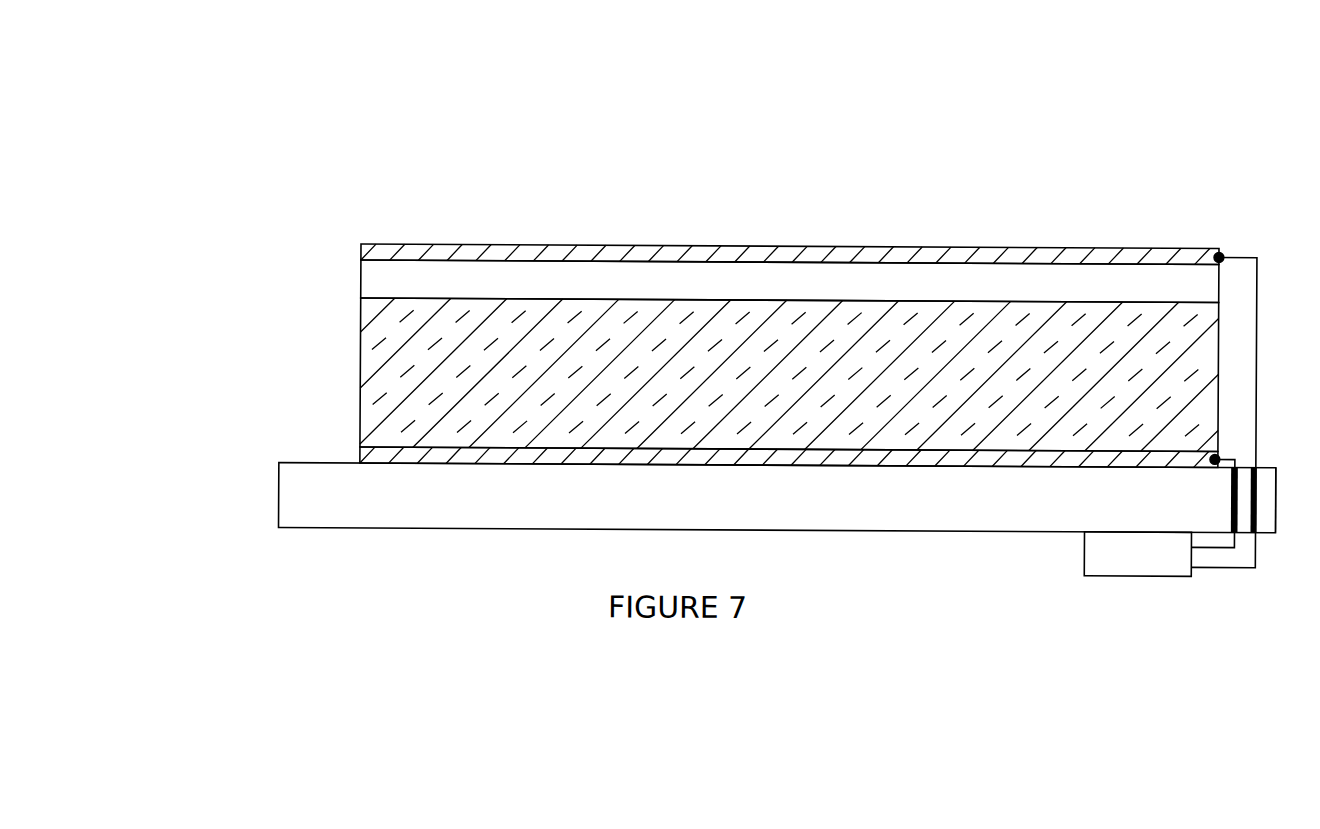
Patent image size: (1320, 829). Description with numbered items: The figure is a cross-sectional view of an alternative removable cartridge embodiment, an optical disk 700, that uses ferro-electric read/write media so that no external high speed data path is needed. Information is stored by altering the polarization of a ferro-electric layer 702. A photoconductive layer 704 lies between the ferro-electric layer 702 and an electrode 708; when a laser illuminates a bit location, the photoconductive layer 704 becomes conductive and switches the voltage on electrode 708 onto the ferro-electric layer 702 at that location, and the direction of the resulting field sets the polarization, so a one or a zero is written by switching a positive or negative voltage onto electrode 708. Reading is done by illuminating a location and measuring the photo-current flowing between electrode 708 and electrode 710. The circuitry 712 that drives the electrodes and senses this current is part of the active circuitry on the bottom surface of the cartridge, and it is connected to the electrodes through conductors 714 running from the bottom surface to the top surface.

The optical disk 700 is at (1147, 104).
The ferro-electric layer 702 is at (372, 330).
The photoconductive layer 704 is at (368, 285).
The electrode 708 is at (498, 252).
The electrode 710 is at (357, 455).
The circuitry 712 is at (1100, 561).
The conductors 714 is at (1278, 433).